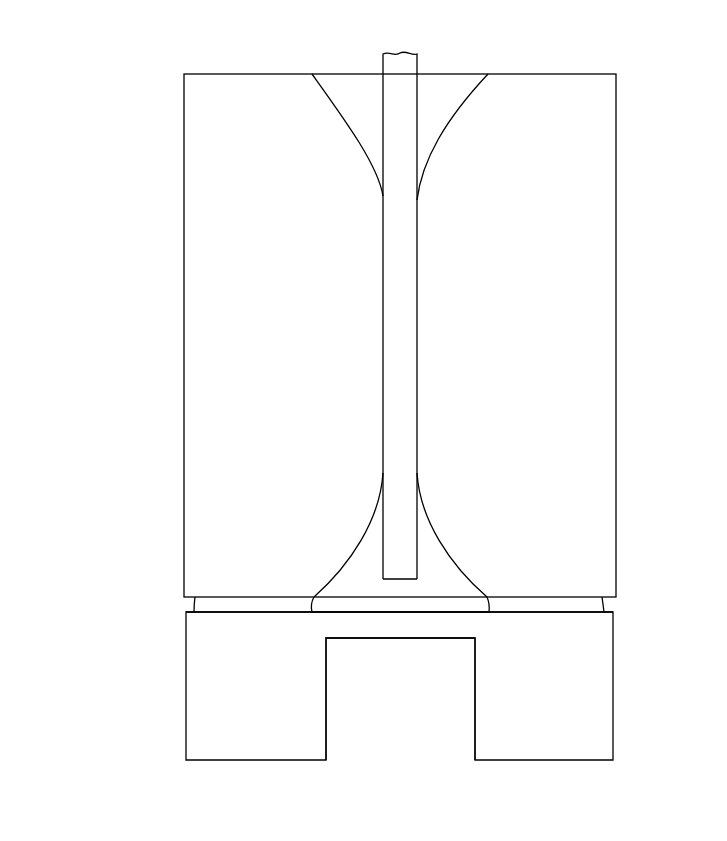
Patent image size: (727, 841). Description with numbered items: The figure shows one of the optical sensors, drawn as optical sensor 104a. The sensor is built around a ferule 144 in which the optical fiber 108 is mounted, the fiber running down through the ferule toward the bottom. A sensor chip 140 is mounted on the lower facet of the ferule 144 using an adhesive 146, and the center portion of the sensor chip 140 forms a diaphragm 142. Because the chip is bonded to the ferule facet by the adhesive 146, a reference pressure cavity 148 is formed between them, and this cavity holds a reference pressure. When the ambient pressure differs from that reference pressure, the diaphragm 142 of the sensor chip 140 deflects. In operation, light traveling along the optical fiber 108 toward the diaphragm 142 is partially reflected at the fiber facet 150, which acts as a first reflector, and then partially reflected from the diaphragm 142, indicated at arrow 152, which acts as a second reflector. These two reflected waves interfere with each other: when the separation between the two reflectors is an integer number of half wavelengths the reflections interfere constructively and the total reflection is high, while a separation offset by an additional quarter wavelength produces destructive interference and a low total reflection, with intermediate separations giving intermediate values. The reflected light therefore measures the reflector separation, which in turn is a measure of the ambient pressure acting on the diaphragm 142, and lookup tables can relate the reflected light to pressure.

The optical sensor 104a is at (152, 44).
The optical fiber 108 is at (399, 72).
The sensor chip 140 is at (221, 667).
The diaphragm 142 is at (390, 641).
The ferule 144 is at (229, 267).
The adhesive 146 is at (196, 602).
The reference pressure cavity 148 is at (334, 609).
The fiber facet 150 is at (382, 574).
The arrow 152 is at (396, 603).